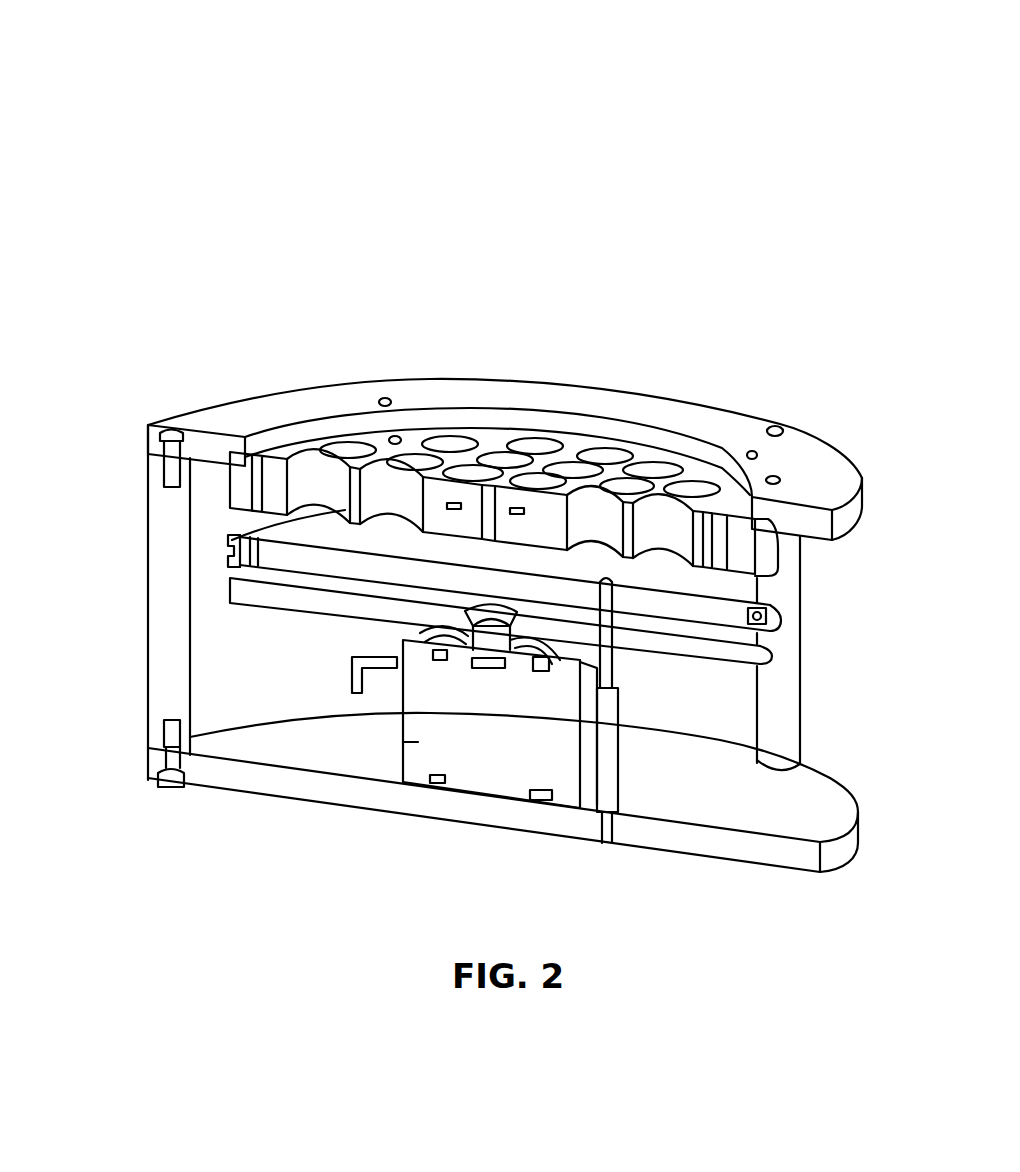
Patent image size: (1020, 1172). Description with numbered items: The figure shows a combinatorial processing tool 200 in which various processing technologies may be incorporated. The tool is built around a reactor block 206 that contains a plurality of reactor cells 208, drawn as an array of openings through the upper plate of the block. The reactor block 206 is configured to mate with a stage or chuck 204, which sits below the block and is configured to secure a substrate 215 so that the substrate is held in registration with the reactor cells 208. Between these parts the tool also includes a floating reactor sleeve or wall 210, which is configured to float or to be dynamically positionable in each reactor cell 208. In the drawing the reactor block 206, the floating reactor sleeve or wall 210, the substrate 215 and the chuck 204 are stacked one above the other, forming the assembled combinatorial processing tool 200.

The combinatorial processing tool 200 is at (549, 49).
The stage or chuck 204 is at (420, 742).
The reactor block 206 is at (806, 583).
The reactor cells 208 is at (447, 437).
The floating reactor sleeve or wall 210 is at (317, 497).
The substrate 215 is at (727, 657).